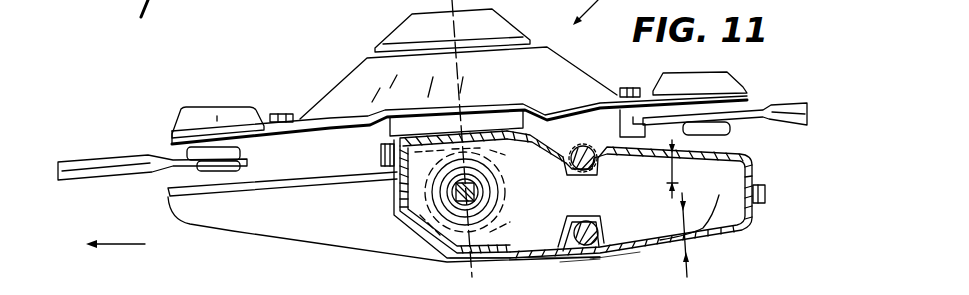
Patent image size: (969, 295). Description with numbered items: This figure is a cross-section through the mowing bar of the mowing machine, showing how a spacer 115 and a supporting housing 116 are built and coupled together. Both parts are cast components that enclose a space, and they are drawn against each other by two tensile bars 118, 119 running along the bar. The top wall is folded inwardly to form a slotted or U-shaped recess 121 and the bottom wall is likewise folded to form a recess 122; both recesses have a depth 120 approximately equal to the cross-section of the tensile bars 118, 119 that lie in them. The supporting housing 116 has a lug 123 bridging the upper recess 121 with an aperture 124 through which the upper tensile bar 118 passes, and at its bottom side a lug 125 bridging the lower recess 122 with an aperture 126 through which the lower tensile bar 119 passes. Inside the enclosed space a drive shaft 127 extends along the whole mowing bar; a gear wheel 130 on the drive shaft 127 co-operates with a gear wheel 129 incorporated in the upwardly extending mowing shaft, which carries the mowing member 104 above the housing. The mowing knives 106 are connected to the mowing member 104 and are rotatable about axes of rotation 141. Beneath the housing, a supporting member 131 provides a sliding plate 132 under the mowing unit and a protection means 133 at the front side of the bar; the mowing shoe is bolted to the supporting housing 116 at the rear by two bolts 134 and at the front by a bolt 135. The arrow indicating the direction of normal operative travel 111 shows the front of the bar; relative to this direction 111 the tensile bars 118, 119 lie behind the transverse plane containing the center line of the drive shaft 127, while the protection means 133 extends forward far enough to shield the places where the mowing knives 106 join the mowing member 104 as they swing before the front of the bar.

The mowing member 104 is at (347, 46).
The mowing knives 106 is at (93, 160).
The direction of normal operative travel 111 is at (127, 244).
The spacer 115 is at (745, 156).
The supporting housing 116 is at (397, 231).
The tensile bar 118 is at (594, 147).
The tensile bar 119 is at (609, 220).
The depth 120 is at (704, 178).
The recess 121 is at (670, 180).
The recess 122 is at (697, 210).
The lug 123 is at (561, 130).
The aperture 124 is at (586, 146).
The lug 125 is at (600, 265).
The aperture 126 is at (580, 262).
The drive shaft 127 is at (478, 192).
The gear wheel 129 is at (508, 161).
The gear wheel 130 is at (500, 218).
The supporting member 131 is at (341, 229).
The sliding plate 132 is at (518, 262).
The protection means 133 is at (173, 189).
The bolt 134 is at (767, 203).
The bolt 135 is at (381, 152).
The axis of rotation 141 is at (217, 173).